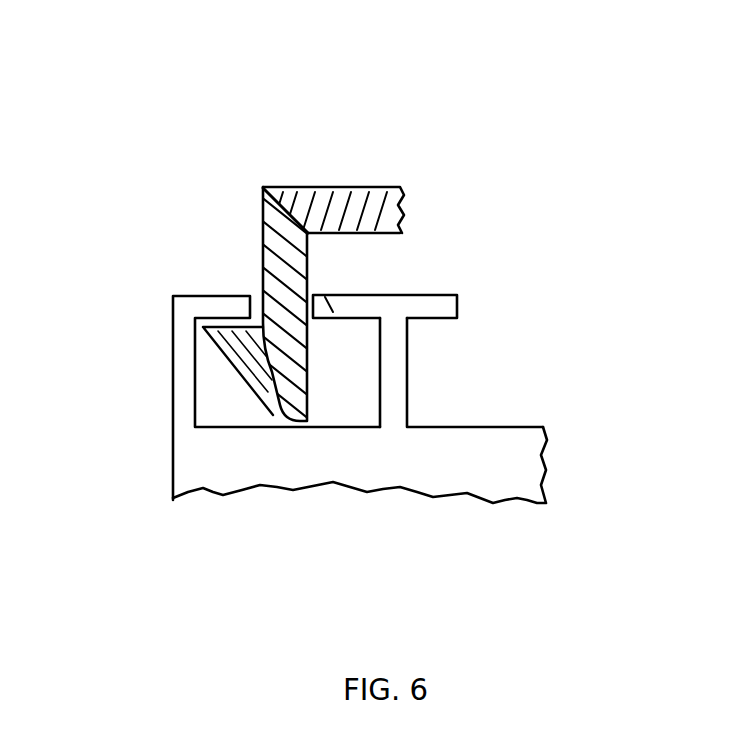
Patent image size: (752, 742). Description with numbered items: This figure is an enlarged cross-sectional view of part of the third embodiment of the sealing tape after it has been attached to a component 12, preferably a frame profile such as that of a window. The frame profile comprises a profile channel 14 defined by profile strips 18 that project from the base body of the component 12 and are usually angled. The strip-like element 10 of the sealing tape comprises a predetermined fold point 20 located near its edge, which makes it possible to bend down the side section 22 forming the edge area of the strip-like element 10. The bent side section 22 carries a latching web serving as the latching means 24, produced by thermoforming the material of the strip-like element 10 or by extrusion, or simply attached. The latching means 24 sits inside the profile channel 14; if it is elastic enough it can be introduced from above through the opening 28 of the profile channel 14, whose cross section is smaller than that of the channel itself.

The strip-like element 10 is at (370, 207).
The component 12 is at (367, 467).
The profile channel 14 is at (353, 357).
The profile strip 18 is at (177, 323).
The predetermined fold point 20 is at (278, 203).
The side section 22 is at (273, 267).
The latching means 24 is at (267, 381).
The opening 28 is at (318, 309).